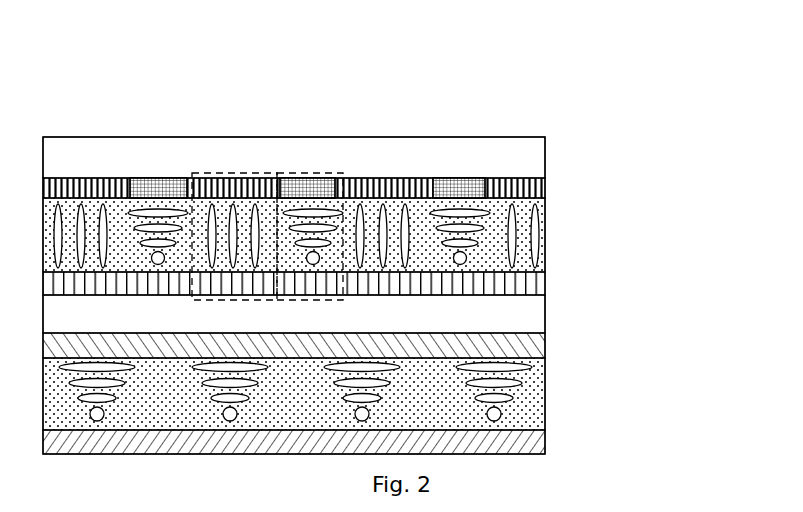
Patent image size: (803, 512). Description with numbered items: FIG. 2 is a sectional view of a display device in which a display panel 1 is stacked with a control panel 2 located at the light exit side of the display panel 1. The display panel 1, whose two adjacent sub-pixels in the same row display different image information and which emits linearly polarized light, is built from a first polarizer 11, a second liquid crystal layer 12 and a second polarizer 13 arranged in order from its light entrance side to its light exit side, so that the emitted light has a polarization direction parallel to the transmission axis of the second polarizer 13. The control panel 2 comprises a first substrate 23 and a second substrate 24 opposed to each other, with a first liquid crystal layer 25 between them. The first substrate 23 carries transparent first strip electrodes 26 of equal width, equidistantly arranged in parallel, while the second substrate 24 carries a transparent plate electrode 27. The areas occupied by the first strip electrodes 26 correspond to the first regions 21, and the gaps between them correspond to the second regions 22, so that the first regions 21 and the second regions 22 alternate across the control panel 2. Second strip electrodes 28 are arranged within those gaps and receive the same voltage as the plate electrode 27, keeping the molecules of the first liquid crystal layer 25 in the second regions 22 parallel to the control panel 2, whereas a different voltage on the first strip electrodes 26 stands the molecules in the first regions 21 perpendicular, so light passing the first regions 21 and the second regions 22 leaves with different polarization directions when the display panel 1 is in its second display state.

The display panel 1 is at (374, 387).
The control panel 2 is at (374, 188).
The first polarizer 11 is at (345, 431).
The second liquid crystal layer 12 is at (533, 395).
The second polarizer 13 is at (535, 352).
The first regions 21 is at (317, 173).
The second regions 22 is at (238, 173).
The first substrate 23 is at (500, 137).
The second substrate 24 is at (532, 320).
The first liquid crystal layer 25 is at (530, 240).
The first strip electrodes 26 is at (535, 195).
The plate electrode 27 is at (530, 285).
The second strip electrodes 28 is at (455, 178).